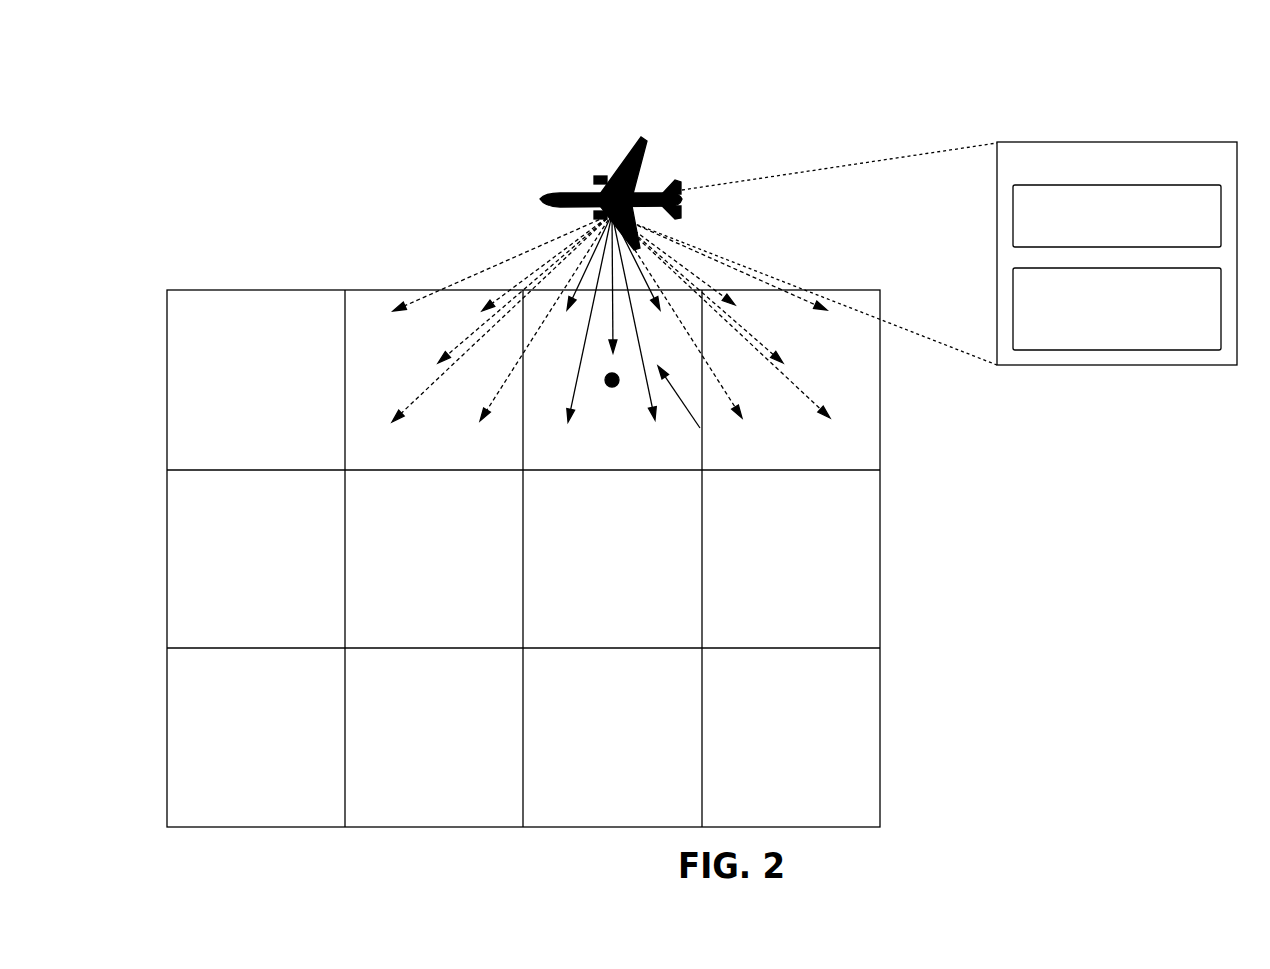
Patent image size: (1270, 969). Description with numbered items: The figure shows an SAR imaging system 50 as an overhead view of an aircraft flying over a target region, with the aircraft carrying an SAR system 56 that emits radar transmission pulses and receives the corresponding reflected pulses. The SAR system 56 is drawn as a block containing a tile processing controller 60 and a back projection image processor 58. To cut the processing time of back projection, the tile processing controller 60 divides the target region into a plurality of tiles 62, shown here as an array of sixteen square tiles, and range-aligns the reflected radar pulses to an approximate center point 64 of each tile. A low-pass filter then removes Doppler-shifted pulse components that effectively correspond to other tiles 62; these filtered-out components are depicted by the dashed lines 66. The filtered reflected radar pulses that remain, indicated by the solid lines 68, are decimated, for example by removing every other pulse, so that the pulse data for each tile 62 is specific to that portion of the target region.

The SAR imaging system 50 is at (245, 76).
The SAR system 56 is at (928, 277).
The back projection image processor 58 is at (1013, 305).
The tile processing controller 60 is at (1013, 217).
The tiles 62 is at (339, 464).
The approximate center point 64 is at (611, 392).
The dashed lines 66 is at (450, 252).
The solid lines 68 is at (700, 428).